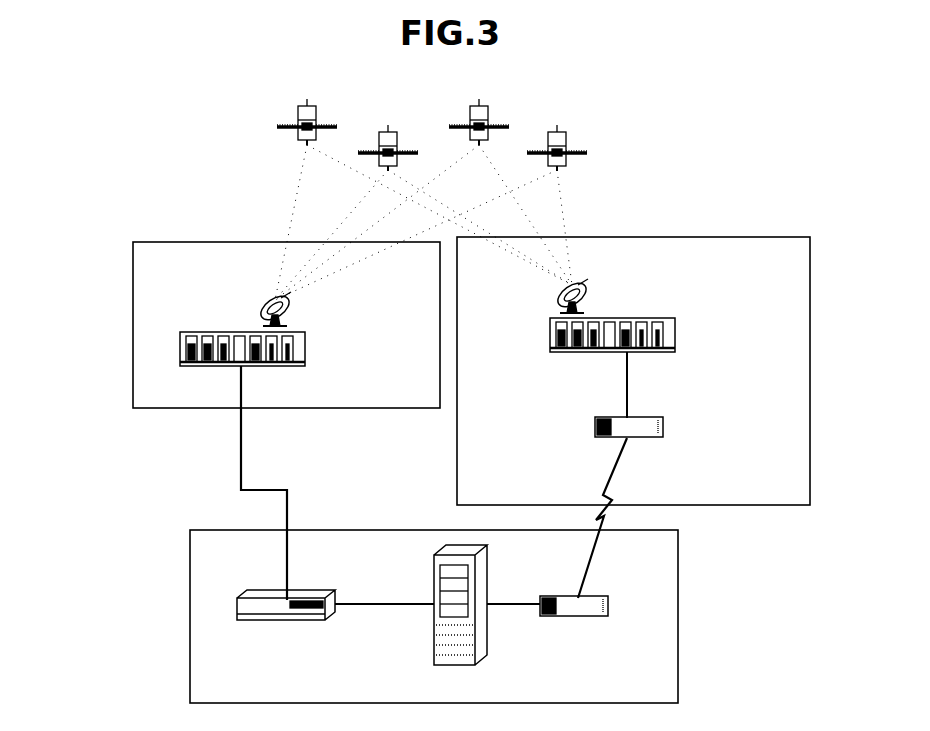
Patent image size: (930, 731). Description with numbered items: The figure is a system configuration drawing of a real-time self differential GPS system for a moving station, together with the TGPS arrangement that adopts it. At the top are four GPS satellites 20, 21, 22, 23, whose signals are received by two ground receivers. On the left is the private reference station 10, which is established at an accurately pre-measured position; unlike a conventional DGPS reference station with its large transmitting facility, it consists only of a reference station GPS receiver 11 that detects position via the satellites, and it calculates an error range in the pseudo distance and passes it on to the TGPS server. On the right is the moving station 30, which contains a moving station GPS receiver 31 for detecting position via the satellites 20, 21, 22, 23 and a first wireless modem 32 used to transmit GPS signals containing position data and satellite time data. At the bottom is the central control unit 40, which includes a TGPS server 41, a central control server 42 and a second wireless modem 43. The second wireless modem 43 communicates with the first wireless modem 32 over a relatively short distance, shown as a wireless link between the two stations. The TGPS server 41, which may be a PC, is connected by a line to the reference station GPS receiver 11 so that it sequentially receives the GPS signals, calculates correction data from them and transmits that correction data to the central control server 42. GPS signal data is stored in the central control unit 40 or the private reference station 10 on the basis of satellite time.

The private reference station 10 is at (231, 308).
The reference station GPS receiver 11 is at (295, 340).
The GPS satellite 20 is at (277, 125).
The GPS satellite 21 is at (380, 134).
The GPS satellite 22 is at (490, 112).
The GPS satellite 23 is at (568, 130).
The moving station 30 is at (662, 354).
The moving station GPS receiver 31 is at (665, 338).
The first wireless modem 32 is at (666, 446).
The central control unit 40 is at (481, 616).
The TGPS server 41 is at (284, 632).
The central control server 42 is at (444, 619).
The second wireless modem 43 is at (574, 643).